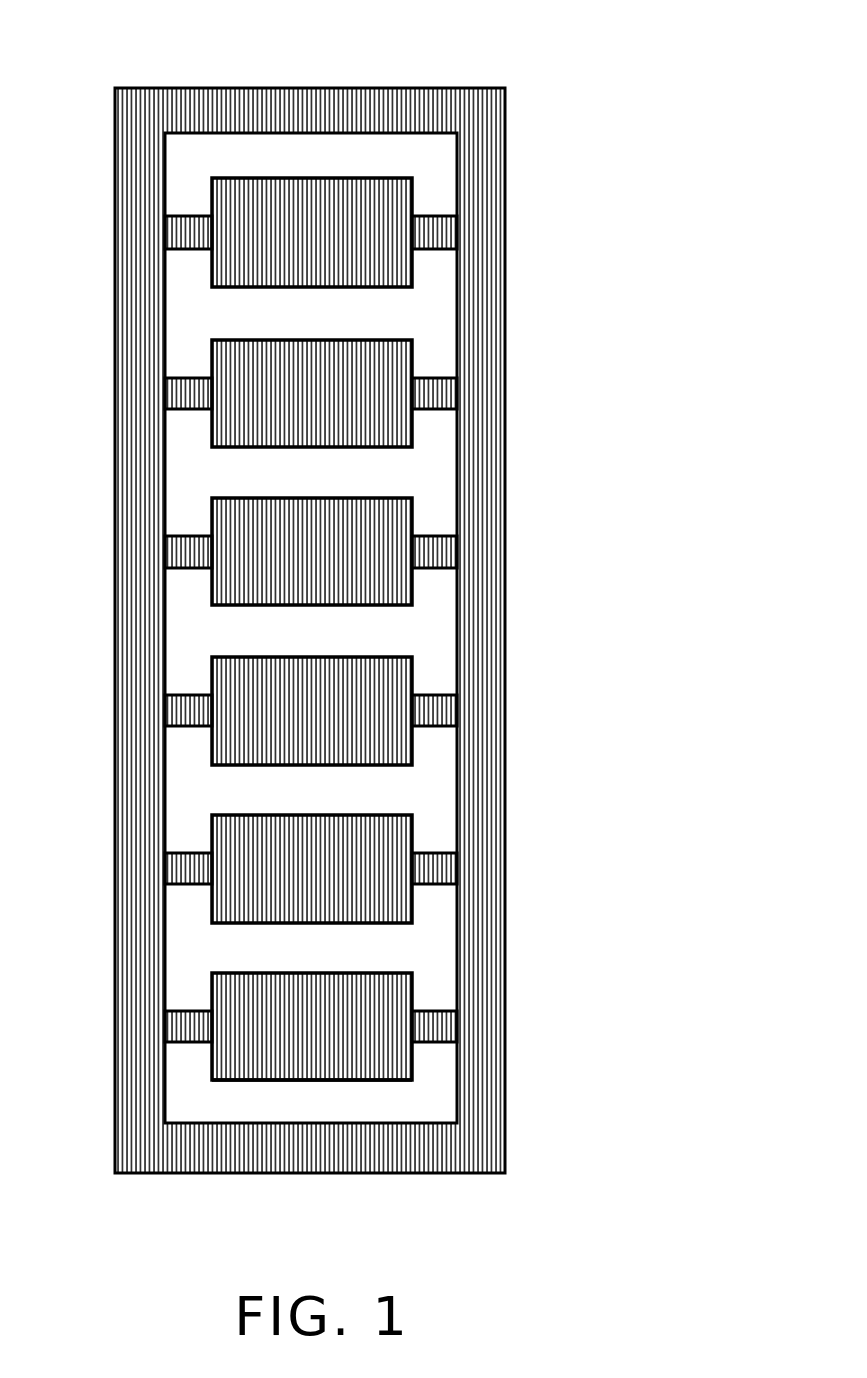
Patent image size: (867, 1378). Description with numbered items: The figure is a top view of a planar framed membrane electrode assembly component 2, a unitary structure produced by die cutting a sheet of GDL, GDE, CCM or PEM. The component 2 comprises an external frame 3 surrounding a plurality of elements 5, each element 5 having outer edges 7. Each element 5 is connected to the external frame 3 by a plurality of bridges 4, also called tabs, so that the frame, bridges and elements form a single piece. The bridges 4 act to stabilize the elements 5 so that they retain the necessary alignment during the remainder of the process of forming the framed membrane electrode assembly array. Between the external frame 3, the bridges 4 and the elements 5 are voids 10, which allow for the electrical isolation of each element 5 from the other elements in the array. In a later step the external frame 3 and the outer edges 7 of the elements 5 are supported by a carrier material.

The framed membrane electrode assembly component 2 is at (432, 58).
The external frame 3 is at (145, 88).
The bridges 4 is at (188, 374).
The element 5 is at (292, 180).
The outer edges 7 is at (272, 1081).
The voids 10 is at (193, 640).